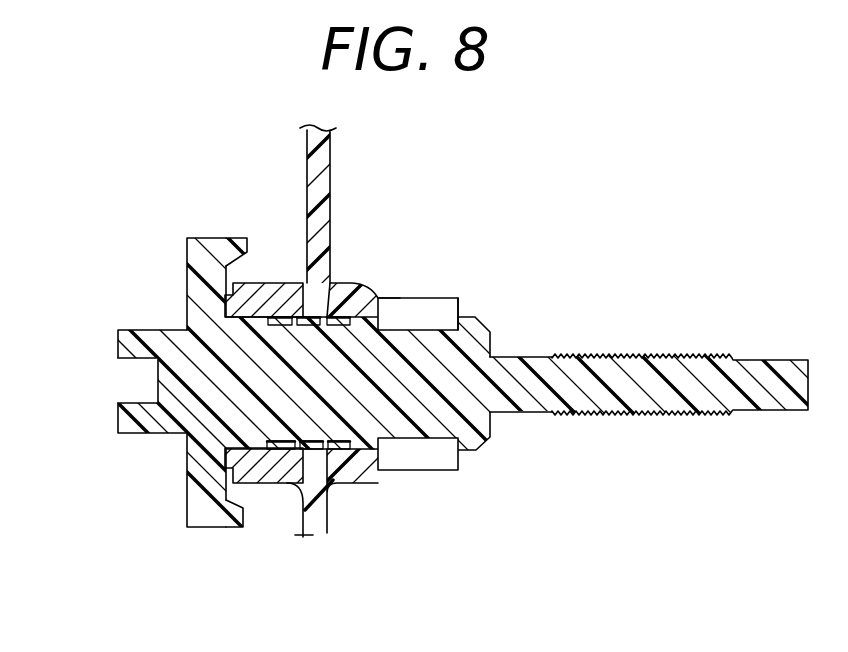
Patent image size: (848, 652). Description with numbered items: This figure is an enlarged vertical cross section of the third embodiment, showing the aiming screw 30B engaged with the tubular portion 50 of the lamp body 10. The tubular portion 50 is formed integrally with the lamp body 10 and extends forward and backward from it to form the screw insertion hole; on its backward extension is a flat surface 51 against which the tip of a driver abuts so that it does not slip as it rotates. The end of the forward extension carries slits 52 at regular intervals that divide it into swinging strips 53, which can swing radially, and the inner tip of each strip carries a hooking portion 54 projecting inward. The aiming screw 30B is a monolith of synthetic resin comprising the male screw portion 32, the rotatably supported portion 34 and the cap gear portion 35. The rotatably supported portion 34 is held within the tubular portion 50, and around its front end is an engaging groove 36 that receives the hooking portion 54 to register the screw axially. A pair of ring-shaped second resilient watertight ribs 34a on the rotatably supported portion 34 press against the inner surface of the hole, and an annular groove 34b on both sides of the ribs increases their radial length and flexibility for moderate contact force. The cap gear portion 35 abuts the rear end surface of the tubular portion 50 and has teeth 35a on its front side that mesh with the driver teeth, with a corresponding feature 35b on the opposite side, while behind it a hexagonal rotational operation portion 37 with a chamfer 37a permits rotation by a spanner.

The lamp body 10 is at (320, 163).
The aiming screw 30B is at (668, 342).
The male screw portion 32 is at (648, 432).
The rotatably supported portion 34 is at (487, 455).
The second resilient watertight ribs 34a is at (357, 297).
The annular groove 34b is at (330, 538).
The cap gear portion 35 is at (192, 262).
The teeth 35a is at (210, 247).
The lower flange lip 35b is at (192, 518).
The engaging groove 36 is at (460, 307).
The rotational operation portion 37 is at (123, 434).
The chamfer 37a is at (140, 358).
The tubular portion 50 is at (260, 490).
The flat surface 51 is at (272, 282).
The slits 52 is at (430, 318).
The swinging strips 53 is at (402, 296).
The hooking portion 54 is at (495, 335).